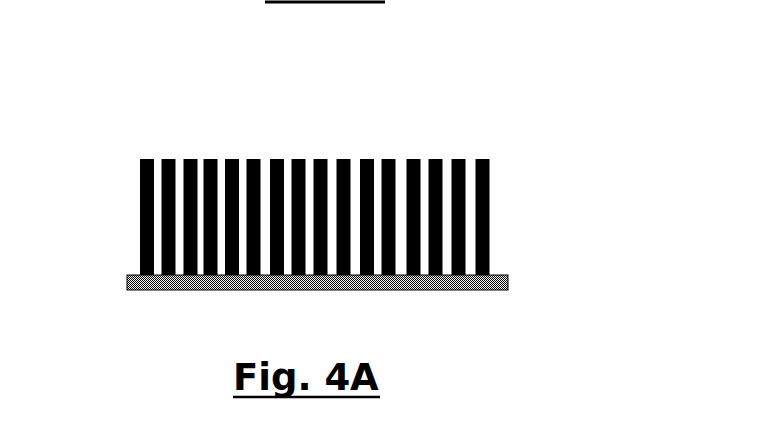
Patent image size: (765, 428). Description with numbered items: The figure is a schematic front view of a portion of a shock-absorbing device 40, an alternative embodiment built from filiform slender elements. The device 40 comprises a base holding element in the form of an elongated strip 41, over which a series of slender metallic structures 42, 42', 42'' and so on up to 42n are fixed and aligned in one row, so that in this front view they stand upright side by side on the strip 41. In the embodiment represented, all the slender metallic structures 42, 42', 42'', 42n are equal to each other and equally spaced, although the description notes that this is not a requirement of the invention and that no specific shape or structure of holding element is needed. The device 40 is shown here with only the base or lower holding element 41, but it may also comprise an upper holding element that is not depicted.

The shock-absorbing device 40 is at (556, 162).
The elongated strip 41 is at (138, 285).
The slender metallic structure 42 is at (97, 196).
The slender metallic structure 42' is at (180, 180).
The slender metallic structure 42'' is at (234, 188).
The slender metallic structure 42n is at (476, 162).